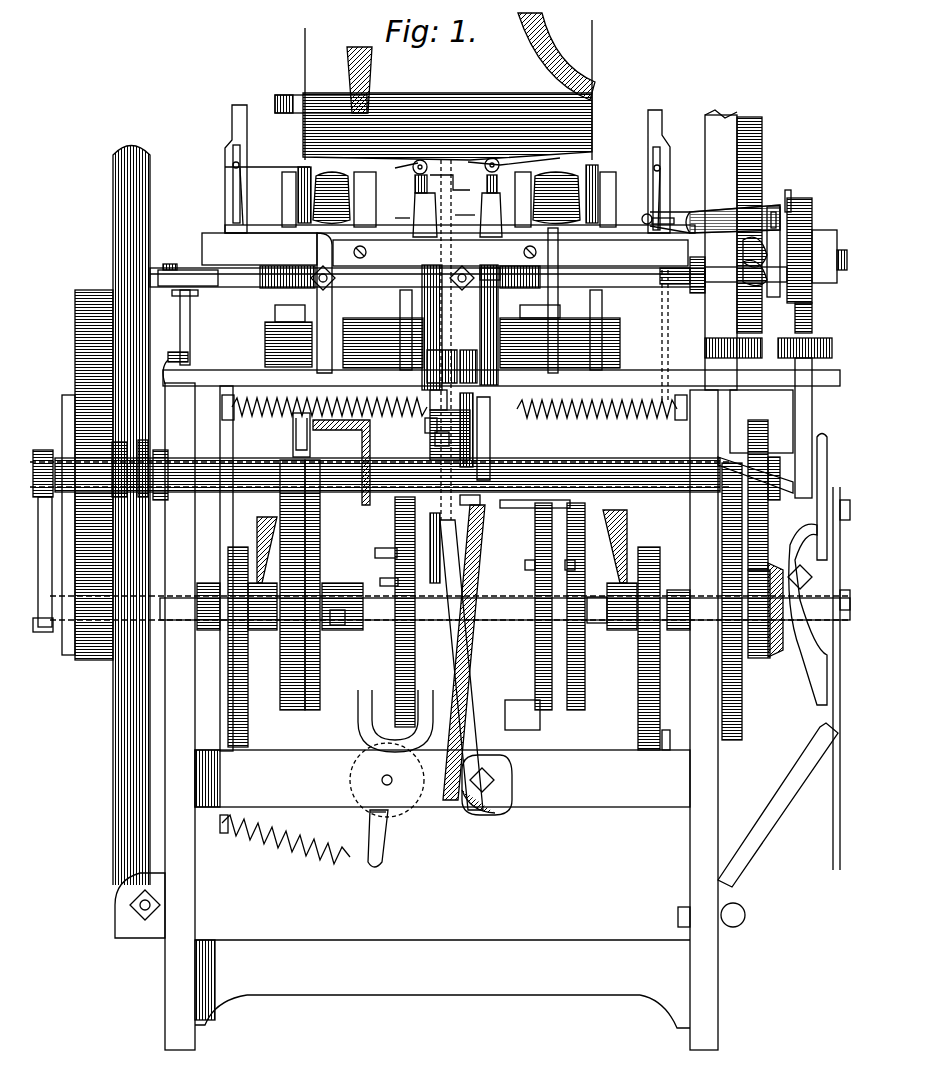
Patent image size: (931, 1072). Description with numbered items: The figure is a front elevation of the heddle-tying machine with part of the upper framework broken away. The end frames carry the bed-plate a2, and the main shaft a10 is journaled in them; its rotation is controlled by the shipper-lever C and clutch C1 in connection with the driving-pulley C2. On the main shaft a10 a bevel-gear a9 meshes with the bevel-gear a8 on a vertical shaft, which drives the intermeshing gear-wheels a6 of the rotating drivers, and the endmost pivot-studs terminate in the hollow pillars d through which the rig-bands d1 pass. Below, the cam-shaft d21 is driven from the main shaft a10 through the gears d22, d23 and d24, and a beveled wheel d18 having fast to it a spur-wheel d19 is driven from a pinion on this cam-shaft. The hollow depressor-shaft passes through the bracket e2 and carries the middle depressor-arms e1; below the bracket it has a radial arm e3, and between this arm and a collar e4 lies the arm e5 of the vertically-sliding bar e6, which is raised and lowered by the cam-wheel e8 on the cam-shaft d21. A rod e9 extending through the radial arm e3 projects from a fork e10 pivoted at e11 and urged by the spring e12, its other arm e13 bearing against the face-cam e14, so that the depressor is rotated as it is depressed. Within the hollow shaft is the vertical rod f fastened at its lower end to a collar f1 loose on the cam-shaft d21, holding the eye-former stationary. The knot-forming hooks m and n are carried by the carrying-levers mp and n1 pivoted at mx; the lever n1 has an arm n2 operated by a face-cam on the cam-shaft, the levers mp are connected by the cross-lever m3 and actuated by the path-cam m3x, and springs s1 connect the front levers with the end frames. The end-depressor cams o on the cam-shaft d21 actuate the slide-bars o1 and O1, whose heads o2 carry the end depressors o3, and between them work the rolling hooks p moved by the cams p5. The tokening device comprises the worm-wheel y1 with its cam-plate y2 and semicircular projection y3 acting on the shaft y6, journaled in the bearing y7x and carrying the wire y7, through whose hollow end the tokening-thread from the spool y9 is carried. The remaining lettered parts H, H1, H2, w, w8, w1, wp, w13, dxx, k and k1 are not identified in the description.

The frame H is at (180, 975).
The frame cross beam H1 is at (442, 867).
The central block H2 is at (492, 415).
The shipper-lever C is at (114, 717).
The clutch C1 is at (118, 470).
The driving-pulley C2 is at (87, 475).
The ruler block w is at (447, 113).
The bar w8 is at (285, 100).
The wedge w1 is at (370, 70).
The part w prime wp is at (403, 205).
The gear w13 is at (402, 680).
The knot-forming hooks m is at (493, 160).
The carrying-lever mp is at (490, 275).
The cross-lever m3 is at (440, 438).
The path-cam m3x is at (563, 498).
The pivot stud mx is at (503, 775).
The rig-bands d1 is at (303, 46).
The hollow pillars d is at (300, 200).
The support dxx is at (302, 166).
The beveled wheel d18 is at (778, 655).
The spur-wheel d19 is at (735, 655).
The cam-shaft d21 is at (352, 617).
The gear d22 is at (738, 715).
The gear d23 is at (720, 548).
The gear d24 is at (762, 425).
The knot-forming hooks n is at (426, 158).
The carrying-lever n1 is at (428, 275).
The arm n2 is at (520, 721).
The end-depressor cams o is at (238, 690).
The vertical slide-bar o1 is at (227, 552).
The head o2 is at (240, 122).
The end depressor o3 is at (244, 200).
The vertical slide-bar O1 is at (662, 520).
The rolling hooks p is at (233, 166).
The cams p5 is at (622, 540).
The cross bar k is at (322, 258).
The bracket k1 is at (200, 272).
The worm-wheel y1 is at (812, 220).
The cam-plate y2 is at (806, 295).
The semicircular projection y3 is at (790, 215).
The shaft y6 is at (700, 215).
The wire y7 is at (645, 222).
The bearing y7x is at (762, 205).
The spool y9 is at (690, 292).
The bed-plate a2 is at (168, 366).
The gear-wheels a6 is at (265, 338).
The bevel-gear a8 is at (335, 428).
The bevel-gear a9 is at (320, 495).
The main shaft a10 is at (258, 478).
The springs s1 is at (265, 405).
The middle depressor-arms e1 is at (465, 203).
The bracket e2 is at (480, 455).
The radial arm e3 is at (480, 525).
The collar e4 is at (482, 500).
The arm e5 is at (428, 520).
The vertically-sliding bar e6 is at (430, 425).
The cam disk or wheel e8 is at (395, 570).
The rod e9 is at (450, 560).
The fork e10 is at (360, 730).
The pivot e11 is at (393, 781).
The spring e12 is at (322, 852).
The arm e13 is at (368, 612).
The face-cam e14 is at (380, 583).
The vertical rod f is at (375, 553).
The collar f1 is at (428, 595).